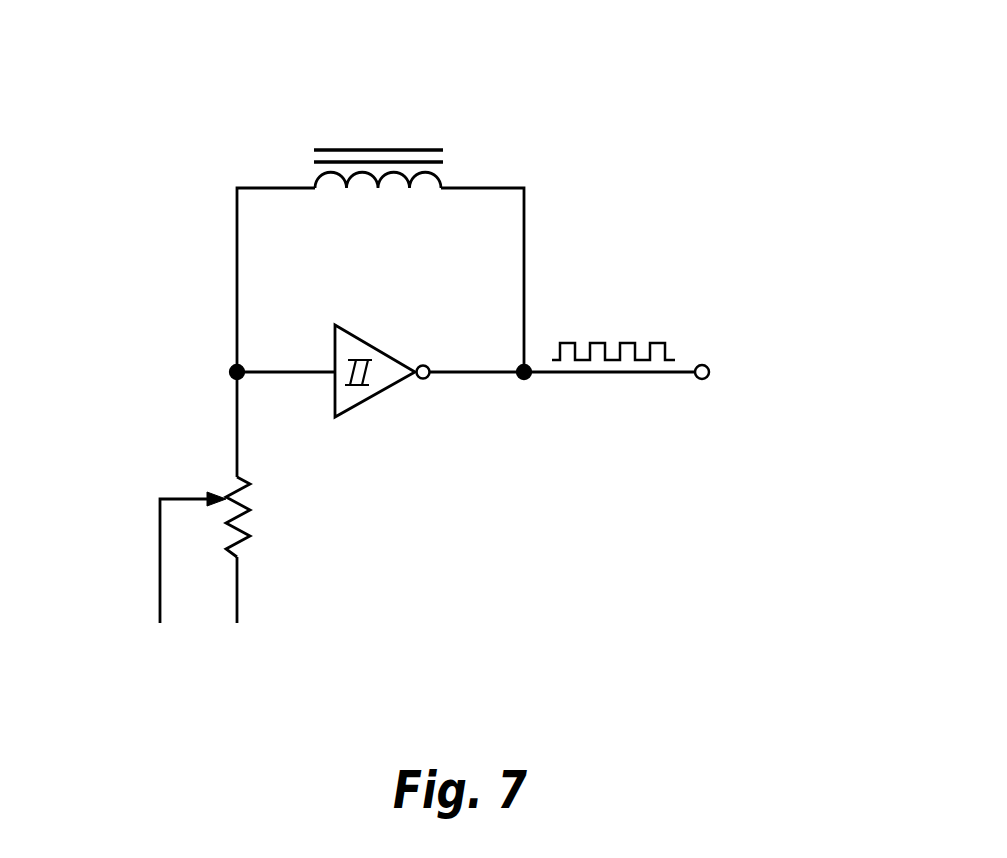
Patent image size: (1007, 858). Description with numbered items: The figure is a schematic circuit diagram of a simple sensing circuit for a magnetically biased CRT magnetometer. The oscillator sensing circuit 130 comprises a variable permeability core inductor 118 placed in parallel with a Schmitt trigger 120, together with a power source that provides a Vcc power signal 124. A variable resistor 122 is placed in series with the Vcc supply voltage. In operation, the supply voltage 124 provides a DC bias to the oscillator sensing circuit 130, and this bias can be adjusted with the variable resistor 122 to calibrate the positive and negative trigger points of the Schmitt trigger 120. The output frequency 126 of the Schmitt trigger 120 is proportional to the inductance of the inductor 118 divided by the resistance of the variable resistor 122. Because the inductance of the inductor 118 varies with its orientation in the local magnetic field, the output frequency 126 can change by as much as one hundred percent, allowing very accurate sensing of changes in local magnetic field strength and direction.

The variable permeability core inductor 118 is at (353, 150).
The Schmitt trigger 120 is at (390, 387).
The variable resistor 122 is at (160, 506).
The Vcc power signal 124 is at (240, 607).
The output frequency 126 is at (702, 364).
The oscillator sensing circuit 130 is at (612, 507).